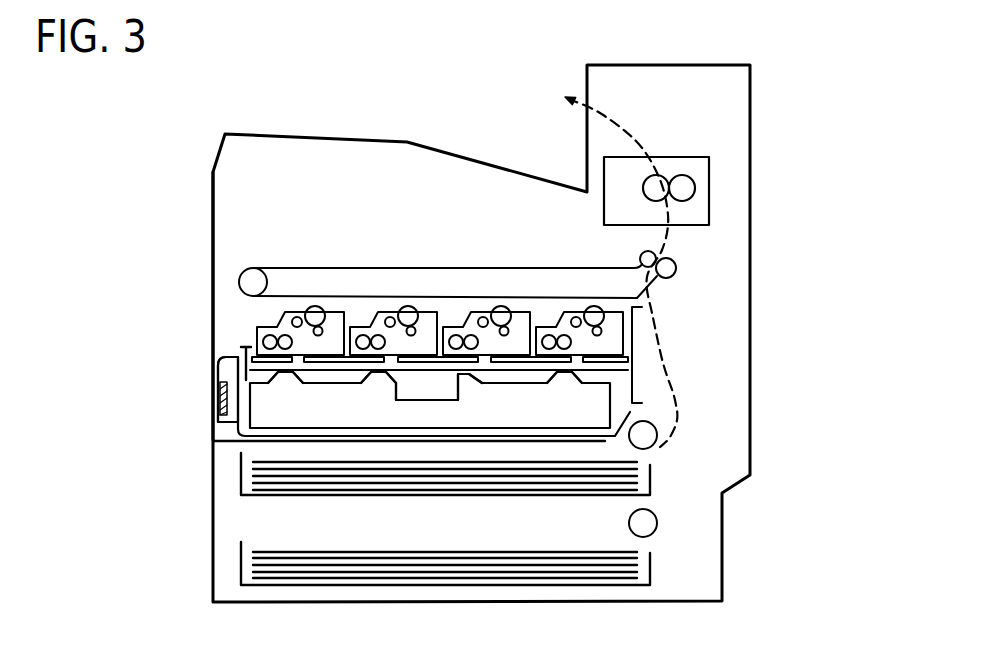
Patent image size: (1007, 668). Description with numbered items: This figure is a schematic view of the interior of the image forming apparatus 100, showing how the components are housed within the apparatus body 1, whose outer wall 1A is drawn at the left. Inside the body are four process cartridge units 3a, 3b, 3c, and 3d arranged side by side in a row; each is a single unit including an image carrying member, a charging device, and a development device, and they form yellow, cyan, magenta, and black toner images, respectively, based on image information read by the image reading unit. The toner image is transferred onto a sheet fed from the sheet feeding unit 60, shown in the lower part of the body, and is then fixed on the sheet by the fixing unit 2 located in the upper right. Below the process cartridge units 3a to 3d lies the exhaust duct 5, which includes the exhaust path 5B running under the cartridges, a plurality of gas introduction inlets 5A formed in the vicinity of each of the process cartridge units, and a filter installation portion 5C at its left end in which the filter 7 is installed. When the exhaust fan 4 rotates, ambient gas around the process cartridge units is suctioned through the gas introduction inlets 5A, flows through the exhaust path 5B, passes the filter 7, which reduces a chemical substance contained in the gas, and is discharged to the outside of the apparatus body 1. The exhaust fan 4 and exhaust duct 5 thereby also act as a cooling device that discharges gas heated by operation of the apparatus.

The image forming apparatus 100 is at (287, 100).
The apparatus body 1 is at (208, 148).
The side wall of main body 1A is at (211, 252).
The fixing unit 2 is at (688, 213).
The process cartridge unit 3a is at (280, 322).
The process cartridge unit 3b is at (373, 322).
The process cartridge unit 3c is at (466, 322).
The process cartridge unit 3d is at (559, 322).
The exhaust fan 4 is at (244, 357).
The exhaust duct 5 is at (214, 359).
The gas introduction inlets 5A is at (310, 326).
The exhaust path 5B is at (448, 400).
The filter installation portion 5C is at (219, 380).
The filter 7 is at (219, 406).
The sheet feeding unit 60 is at (230, 524).